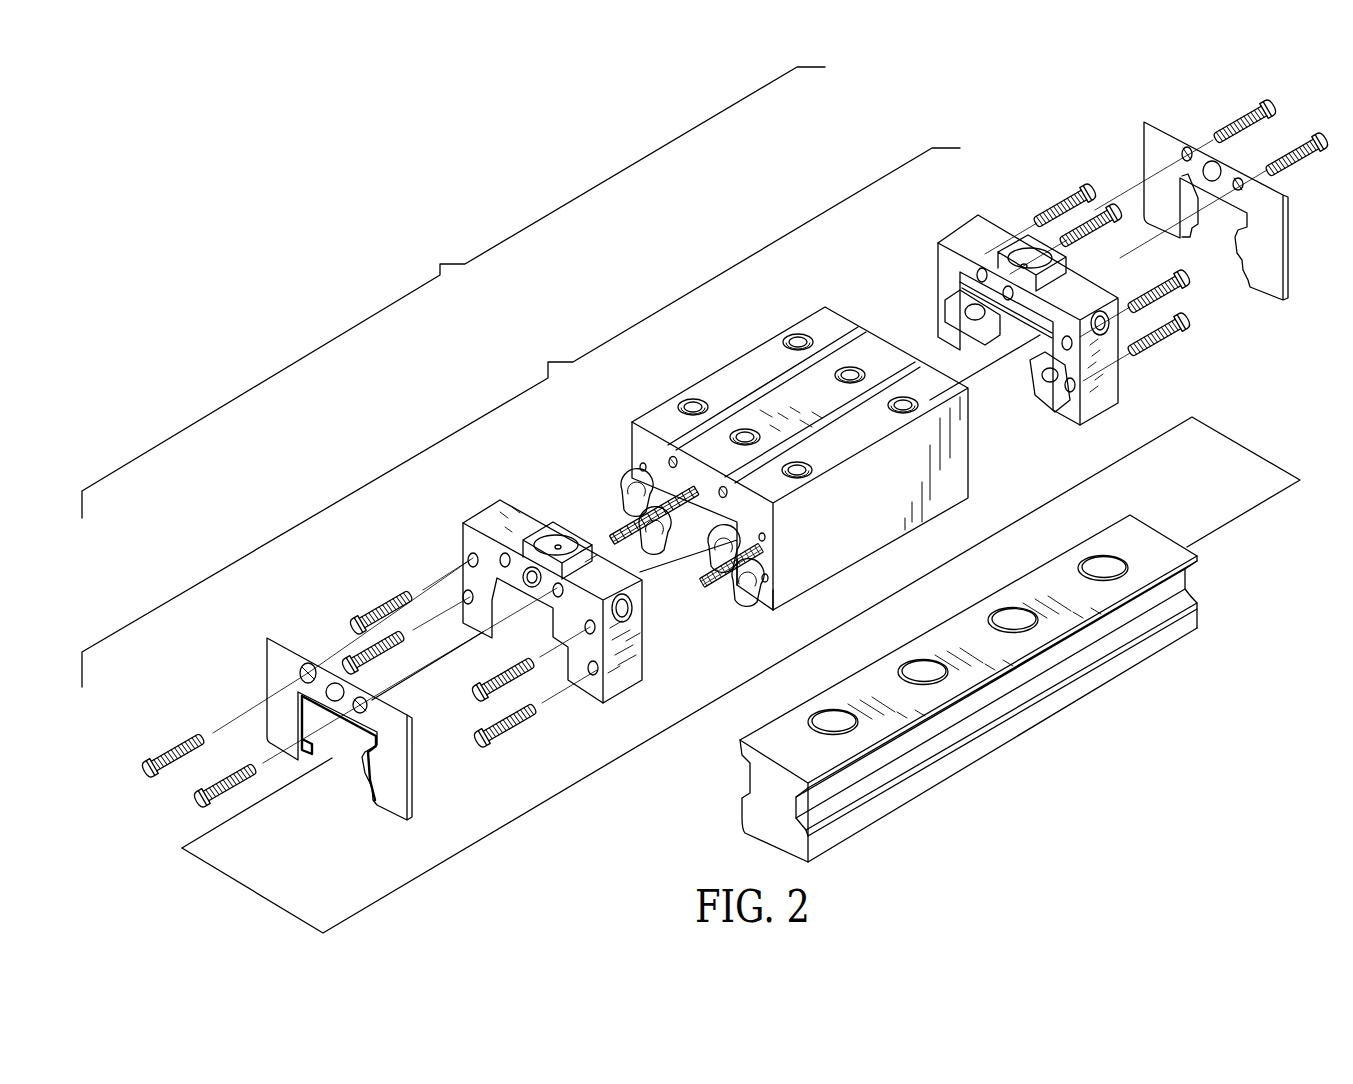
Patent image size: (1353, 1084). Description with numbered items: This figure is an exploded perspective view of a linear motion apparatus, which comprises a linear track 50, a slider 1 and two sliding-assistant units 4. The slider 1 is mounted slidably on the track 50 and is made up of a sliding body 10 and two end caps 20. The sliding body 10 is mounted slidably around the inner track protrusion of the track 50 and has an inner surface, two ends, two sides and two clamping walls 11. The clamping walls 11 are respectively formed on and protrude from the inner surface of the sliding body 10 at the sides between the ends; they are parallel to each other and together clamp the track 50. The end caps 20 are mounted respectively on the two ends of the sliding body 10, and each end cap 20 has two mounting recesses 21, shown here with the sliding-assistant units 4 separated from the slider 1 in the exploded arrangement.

The slider 1 is at (691, 500).
The sliding body 10 is at (712, 365).
The clamping wall 11 is at (767, 548).
The end cap 20 is at (466, 486).
The mounting recess 21 is at (967, 323).
The sliding-assistant unit 4 is at (605, 494).
The linear track 50 is at (1128, 700).